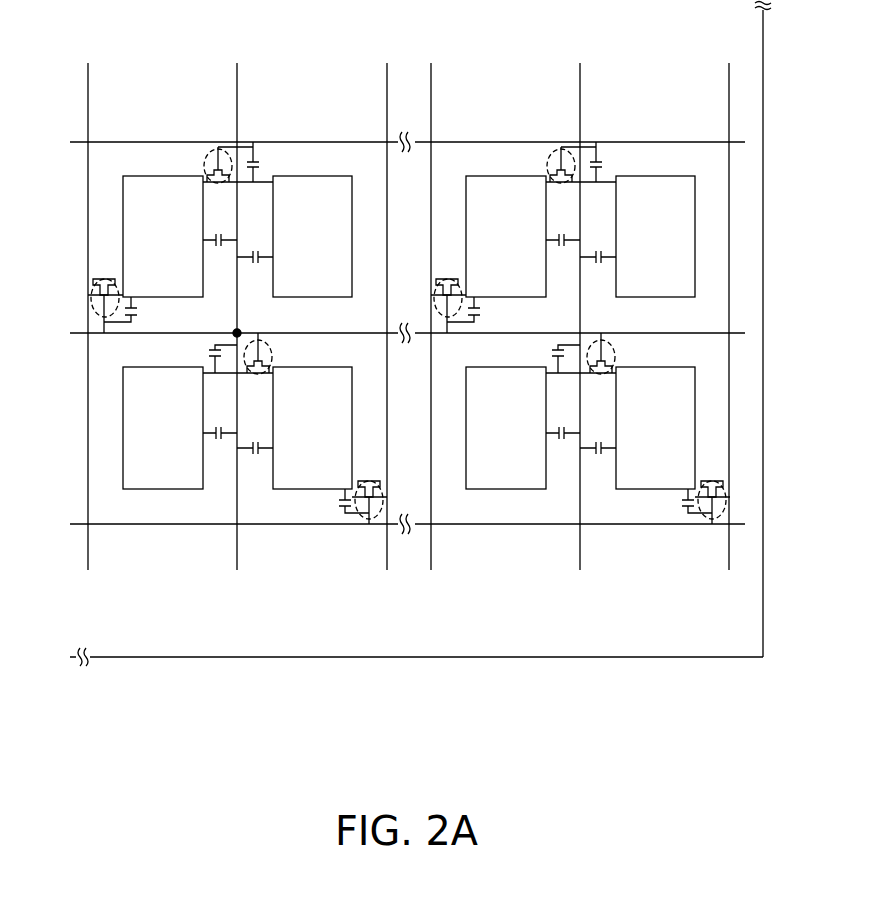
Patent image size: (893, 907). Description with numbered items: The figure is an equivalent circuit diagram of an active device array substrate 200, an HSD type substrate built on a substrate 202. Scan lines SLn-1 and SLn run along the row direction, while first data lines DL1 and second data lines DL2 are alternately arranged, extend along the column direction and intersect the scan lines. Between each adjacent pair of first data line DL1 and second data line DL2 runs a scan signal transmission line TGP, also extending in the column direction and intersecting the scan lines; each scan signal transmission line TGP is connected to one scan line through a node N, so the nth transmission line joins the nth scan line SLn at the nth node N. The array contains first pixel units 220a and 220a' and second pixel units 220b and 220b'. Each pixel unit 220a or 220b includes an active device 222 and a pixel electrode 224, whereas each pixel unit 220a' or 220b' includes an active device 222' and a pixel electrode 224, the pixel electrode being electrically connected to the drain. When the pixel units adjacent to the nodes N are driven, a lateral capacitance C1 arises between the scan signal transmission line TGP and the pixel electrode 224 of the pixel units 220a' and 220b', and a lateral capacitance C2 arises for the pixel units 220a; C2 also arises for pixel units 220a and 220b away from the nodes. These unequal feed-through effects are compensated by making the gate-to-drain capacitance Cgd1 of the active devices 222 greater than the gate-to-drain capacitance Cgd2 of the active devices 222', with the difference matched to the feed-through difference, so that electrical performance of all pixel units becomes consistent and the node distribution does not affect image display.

The pixel electrode 224 is at (168, 177).
The active device 222' is at (231, 336).
The active device 222 is at (574, 336).
The first pixel unit 220a' is at (180, 166).
The second pixel unit 220b' is at (237, 335).
The first pixel unit 220a is at (506, 335).
The second pixel unit 220b is at (580, 335).
The active device array substrate 200 is at (697, 658).
The substrate 202 is at (743, 633).
The lateral capacitance C1 is at (238, 350).
The lateral capacitance C2 is at (426, 358).
The gate-to-drain capacitance Cgd1 is at (579, 329).
The gate-to-drain capacitance Cgd2 is at (236, 329).
The node N is at (234, 330).
The scan signal transmission line TGP is at (406, 304).
The first data line DL1 is at (253, 304).
The second data line DL2 is at (553, 304).
The scan line SLn-1 is at (385, 154).
The scan line SLn is at (385, 330).